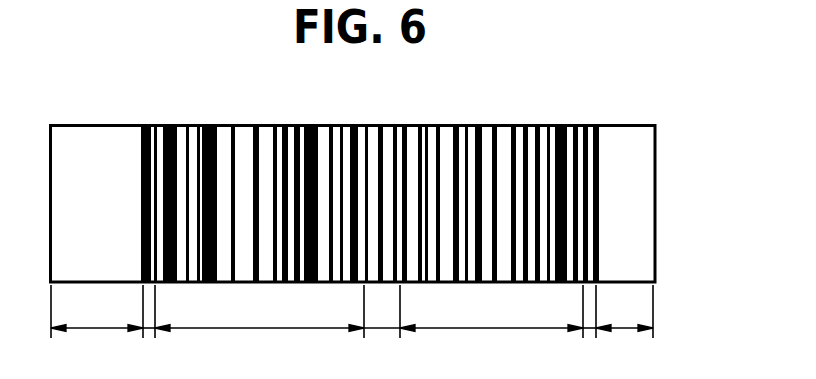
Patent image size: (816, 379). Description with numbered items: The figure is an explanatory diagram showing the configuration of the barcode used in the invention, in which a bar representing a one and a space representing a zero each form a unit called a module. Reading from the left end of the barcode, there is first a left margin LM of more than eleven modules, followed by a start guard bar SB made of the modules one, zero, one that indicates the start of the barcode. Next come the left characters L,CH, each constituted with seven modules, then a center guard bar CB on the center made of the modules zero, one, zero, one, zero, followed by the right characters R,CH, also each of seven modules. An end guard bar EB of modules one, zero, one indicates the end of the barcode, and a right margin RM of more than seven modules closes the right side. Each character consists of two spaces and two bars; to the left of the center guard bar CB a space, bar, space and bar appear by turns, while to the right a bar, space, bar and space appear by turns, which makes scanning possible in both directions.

The left margin LM is at (97, 313).
The start guard bar SB is at (150, 328).
The left characters L,CH is at (259, 229).
The center guard bar CB is at (383, 328).
The right characters R,CH is at (491, 229).
The end guard bar EB is at (588, 328).
The right margin RM is at (624, 313).